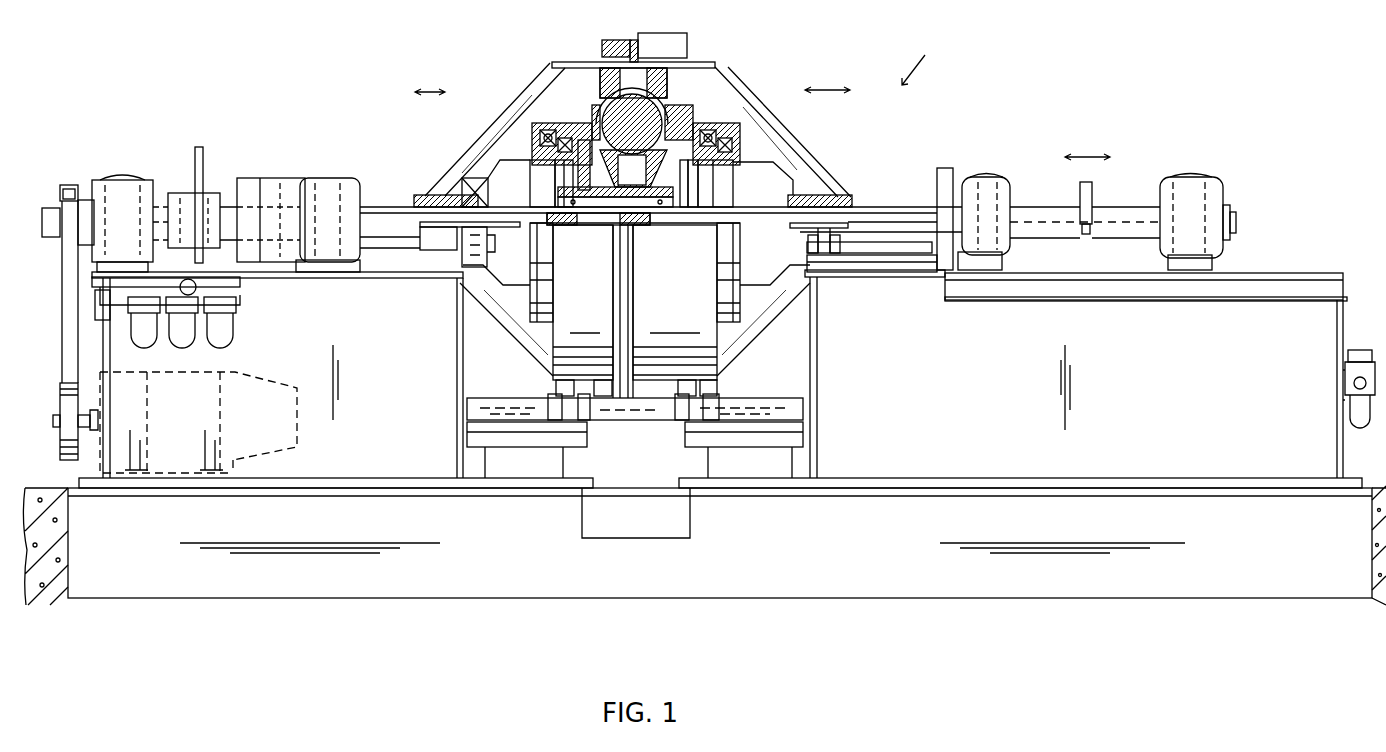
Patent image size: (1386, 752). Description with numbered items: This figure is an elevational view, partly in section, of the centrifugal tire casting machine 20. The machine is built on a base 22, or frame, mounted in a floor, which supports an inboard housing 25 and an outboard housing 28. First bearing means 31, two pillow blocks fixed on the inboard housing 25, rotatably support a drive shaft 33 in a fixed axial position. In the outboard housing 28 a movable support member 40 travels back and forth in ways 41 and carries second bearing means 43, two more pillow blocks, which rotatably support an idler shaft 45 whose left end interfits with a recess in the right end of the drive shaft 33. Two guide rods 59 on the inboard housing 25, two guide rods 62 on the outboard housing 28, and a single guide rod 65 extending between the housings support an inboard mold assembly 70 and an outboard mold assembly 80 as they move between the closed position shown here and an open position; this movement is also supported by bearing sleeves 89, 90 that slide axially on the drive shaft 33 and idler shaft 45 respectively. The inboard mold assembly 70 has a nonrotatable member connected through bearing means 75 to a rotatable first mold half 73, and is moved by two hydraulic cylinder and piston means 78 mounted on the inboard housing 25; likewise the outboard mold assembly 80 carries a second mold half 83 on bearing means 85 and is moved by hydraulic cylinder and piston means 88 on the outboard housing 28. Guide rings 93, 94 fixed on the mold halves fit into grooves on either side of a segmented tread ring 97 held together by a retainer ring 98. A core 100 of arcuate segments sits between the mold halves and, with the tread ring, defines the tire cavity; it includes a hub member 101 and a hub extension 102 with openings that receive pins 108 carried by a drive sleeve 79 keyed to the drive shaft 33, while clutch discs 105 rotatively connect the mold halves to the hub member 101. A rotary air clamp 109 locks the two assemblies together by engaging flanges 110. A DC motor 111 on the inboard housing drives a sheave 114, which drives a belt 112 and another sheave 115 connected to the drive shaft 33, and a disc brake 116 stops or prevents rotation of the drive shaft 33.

The centrifugal tire casting machine 20 is at (923, 59).
The base 22 is at (1163, 478).
The inboard housing 25 is at (357, 386).
The outboard housing 28 is at (1110, 394).
The first bearing means 31 is at (125, 182).
The drive shaft 33 is at (375, 207).
The movable support member 40 is at (1120, 273).
The ways 41 is at (1145, 297).
The second bearing means 43 is at (985, 180).
The idler shaft 45 is at (1125, 210).
The guide rods 59 is at (405, 250).
The guide rods 62 is at (900, 253).
The guide rod 65 is at (650, 412).
The inboard mold assembly 70 is at (518, 73).
The first or inboard mold half 73 is at (582, 129).
The bearing means 75 is at (540, 140).
The hydraulic cylinder and piston means 78 is at (270, 178).
The drive sleeve 79 is at (513, 205).
The outboard mold assembly 80 is at (752, 88).
The second or outboard mold half 83 is at (712, 126).
The bearing means 85 is at (726, 146).
The hydraulic cylinder and piston means 88 is at (1040, 197).
The bearing sleeve 89 is at (432, 195).
The bearing sleeve 90 is at (836, 196).
The guide ring 93 is at (612, 100).
The guide ring 94 is at (714, 86).
The tread ring 97 is at (672, 121).
The retainer ring 98 is at (650, 75).
The core 100 is at (605, 118).
The hub member 101 is at (640, 225).
The hub extension 102 is at (602, 213).
The clutch discs 105 is at (690, 178).
The pins 108 is at (577, 220).
The rotary air clamp 109 is at (668, 38).
The flanges 110 is at (618, 303).
The DC motor 111 is at (233, 371).
The belt 112 is at (62, 351).
The sheave 114 is at (58, 400).
The sheave 115 is at (62, 188).
The disc brake 116 is at (223, 172).